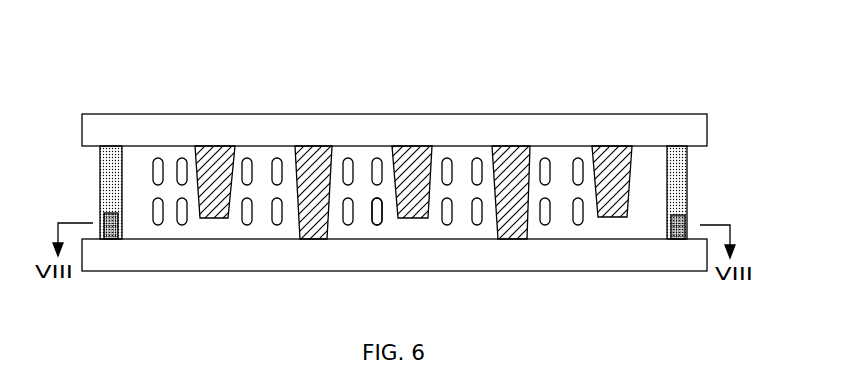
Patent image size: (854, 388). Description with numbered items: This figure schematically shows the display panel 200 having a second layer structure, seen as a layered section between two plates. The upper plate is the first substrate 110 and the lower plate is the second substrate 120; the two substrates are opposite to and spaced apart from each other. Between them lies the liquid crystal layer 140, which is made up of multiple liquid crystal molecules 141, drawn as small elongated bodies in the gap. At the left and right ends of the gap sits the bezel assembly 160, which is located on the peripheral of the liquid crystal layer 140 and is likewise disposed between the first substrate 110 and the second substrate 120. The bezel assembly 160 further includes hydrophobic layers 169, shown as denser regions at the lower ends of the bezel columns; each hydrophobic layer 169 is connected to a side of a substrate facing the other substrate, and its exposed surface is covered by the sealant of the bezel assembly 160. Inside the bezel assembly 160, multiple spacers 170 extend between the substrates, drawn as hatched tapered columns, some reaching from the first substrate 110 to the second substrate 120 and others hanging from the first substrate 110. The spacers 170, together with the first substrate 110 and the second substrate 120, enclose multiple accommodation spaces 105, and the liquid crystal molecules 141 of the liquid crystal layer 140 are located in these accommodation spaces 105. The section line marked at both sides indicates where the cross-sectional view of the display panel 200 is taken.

The display panel 200 is at (408, 42).
The first substrate 110 is at (562, 116).
The second substrate 120 is at (463, 248).
The bezel assembly 160 is at (112, 147).
The hydrophobic layer 169 is at (101, 213).
The spacer 170 is at (215, 219).
The accommodation space 105 is at (533, 221).
The liquid crystal molecule 141 is at (578, 226).
The liquid crystal layer 140 is at (378, 228).